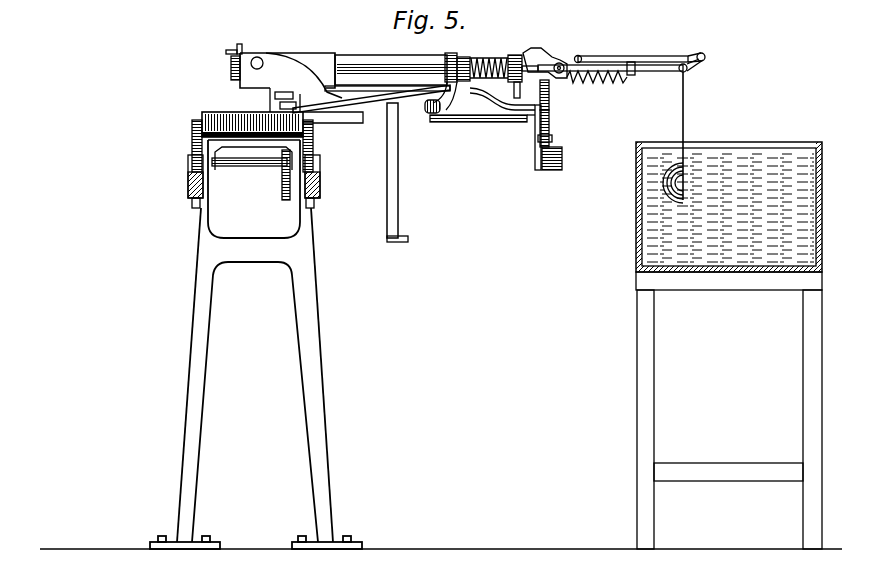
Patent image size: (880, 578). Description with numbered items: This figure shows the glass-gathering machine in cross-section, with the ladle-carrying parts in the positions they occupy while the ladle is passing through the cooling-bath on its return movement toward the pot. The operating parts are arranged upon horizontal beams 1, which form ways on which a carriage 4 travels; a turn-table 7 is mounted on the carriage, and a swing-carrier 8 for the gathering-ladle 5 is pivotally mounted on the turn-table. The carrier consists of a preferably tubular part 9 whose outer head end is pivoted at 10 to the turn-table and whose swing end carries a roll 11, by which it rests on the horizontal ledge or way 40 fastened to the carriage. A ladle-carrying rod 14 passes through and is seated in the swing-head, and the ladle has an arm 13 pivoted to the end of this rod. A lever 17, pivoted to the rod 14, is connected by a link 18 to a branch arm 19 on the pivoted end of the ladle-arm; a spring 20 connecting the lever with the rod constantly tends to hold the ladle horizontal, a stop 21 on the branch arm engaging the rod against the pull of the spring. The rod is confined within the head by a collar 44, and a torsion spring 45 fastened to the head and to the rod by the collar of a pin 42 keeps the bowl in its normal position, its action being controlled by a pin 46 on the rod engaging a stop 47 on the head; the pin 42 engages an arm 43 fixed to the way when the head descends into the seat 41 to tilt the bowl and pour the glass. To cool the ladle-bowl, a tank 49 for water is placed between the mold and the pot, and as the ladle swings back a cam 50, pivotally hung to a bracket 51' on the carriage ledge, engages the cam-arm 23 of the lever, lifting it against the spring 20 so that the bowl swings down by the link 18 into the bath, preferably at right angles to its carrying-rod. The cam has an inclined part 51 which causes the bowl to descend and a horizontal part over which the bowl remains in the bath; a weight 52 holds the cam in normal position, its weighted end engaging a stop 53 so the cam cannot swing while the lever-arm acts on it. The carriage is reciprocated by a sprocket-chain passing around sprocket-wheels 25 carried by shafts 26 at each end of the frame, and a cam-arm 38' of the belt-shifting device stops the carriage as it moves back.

The horizontal beams 1 is at (188, 186).
The carriage 4 is at (258, 150).
The gathering-ladle 5 is at (673, 183).
The turn-table 7 is at (282, 118).
The swing-carrier 8 is at (291, 74).
The tubular part 9 is at (391, 62).
The pivot 10 is at (258, 58).
The roll 11 is at (452, 53).
The ladle-arm 13 is at (685, 110).
The ladle-carrying rod 14 is at (652, 71).
The lever 17 is at (577, 55).
The link 18 is at (620, 56).
The branch arm 19 is at (704, 64).
The spring 20 is at (593, 84).
The stop 21 is at (701, 53).
The cam-arm 23 is at (539, 49).
The sprocket-wheels 25 is at (285, 200).
The shafts 26 is at (238, 166).
The cam-arm of belt-shifting device 38' is at (407, 172).
The ledge or way 40 is at (405, 84).
The sunken seat 41 is at (446, 112).
The pin or lug 42 is at (514, 92).
The arm 43 is at (496, 113).
The collar 44 is at (231, 78).
The torsion spring 45 is at (499, 57).
The pin or lug 46 is at (240, 44).
The stop 47 is at (226, 52).
The tank 49 is at (729, 336).
The cam 50 is at (549, 112).
The inclined part 51 is at (556, 95).
The bracket 51' is at (517, 137).
The weight 52 is at (553, 170).
The stop 53 is at (552, 138).